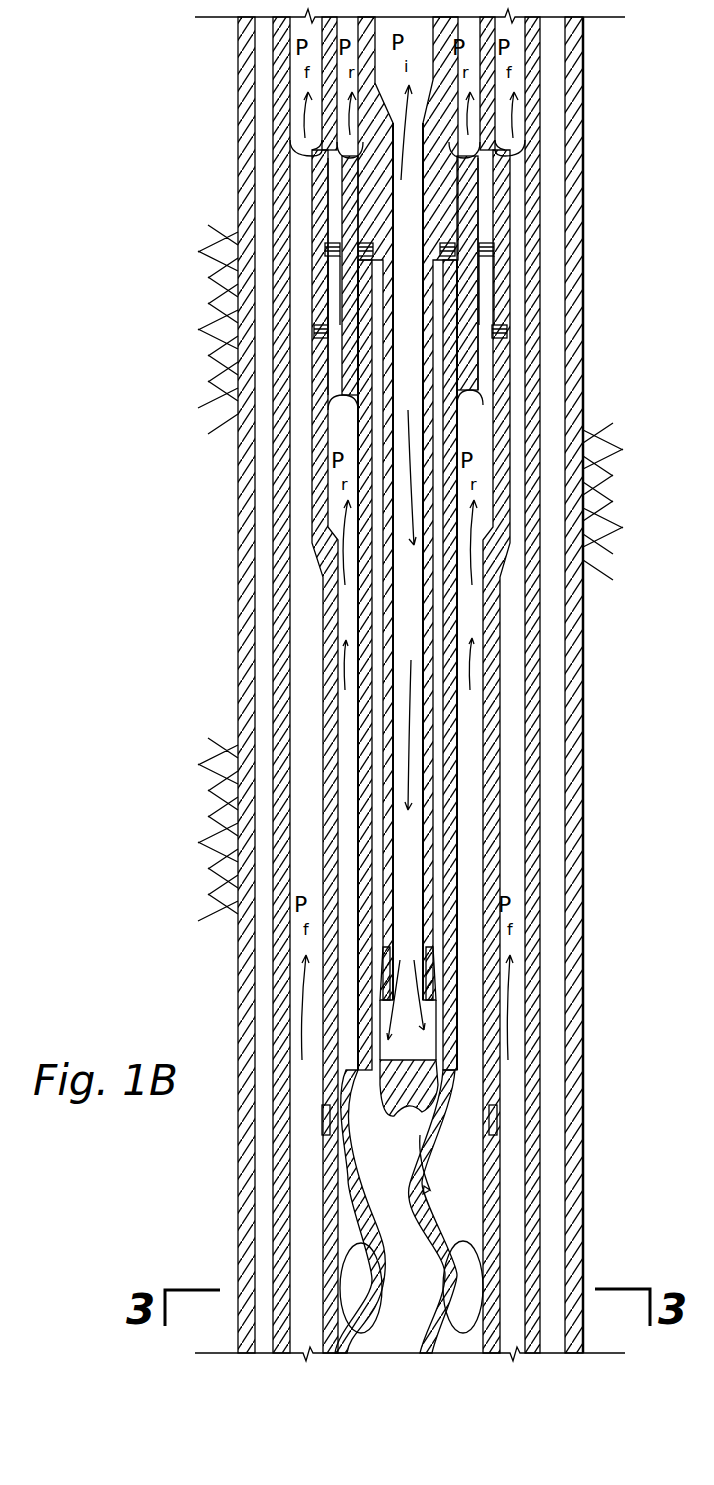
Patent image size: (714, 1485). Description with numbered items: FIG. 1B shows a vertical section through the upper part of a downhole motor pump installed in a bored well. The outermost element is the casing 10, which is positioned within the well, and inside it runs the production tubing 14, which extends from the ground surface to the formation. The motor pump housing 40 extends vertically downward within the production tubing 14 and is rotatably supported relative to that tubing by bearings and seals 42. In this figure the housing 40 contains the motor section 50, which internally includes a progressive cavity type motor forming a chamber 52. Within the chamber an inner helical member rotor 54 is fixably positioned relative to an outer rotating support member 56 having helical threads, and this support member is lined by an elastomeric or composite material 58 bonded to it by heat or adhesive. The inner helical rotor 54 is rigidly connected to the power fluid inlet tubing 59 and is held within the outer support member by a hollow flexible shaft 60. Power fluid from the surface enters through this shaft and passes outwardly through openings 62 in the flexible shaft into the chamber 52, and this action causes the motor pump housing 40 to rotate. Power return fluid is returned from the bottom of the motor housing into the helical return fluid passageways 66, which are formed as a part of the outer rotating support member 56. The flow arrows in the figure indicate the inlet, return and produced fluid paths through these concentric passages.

The casing 10 is at (572, 58).
The production tubing 14 is at (538, 408).
The motor pump housing 40 is at (500, 600).
The bearings and seals 42 is at (463, 238).
The motor section 50 is at (416, 1211).
The chamber 52 is at (470, 1158).
The inner helical member rotor 54 is at (350, 1275).
The outer rotating support member 56 is at (346, 1160).
The elastomeric or composite material 58 is at (478, 1208).
The power fluid inlet tubing 59 is at (437, 107).
The hollow flexible shaft 60 is at (430, 686).
The openings 62 is at (434, 1010).
The helical return fluid passageways 66 is at (478, 1278).